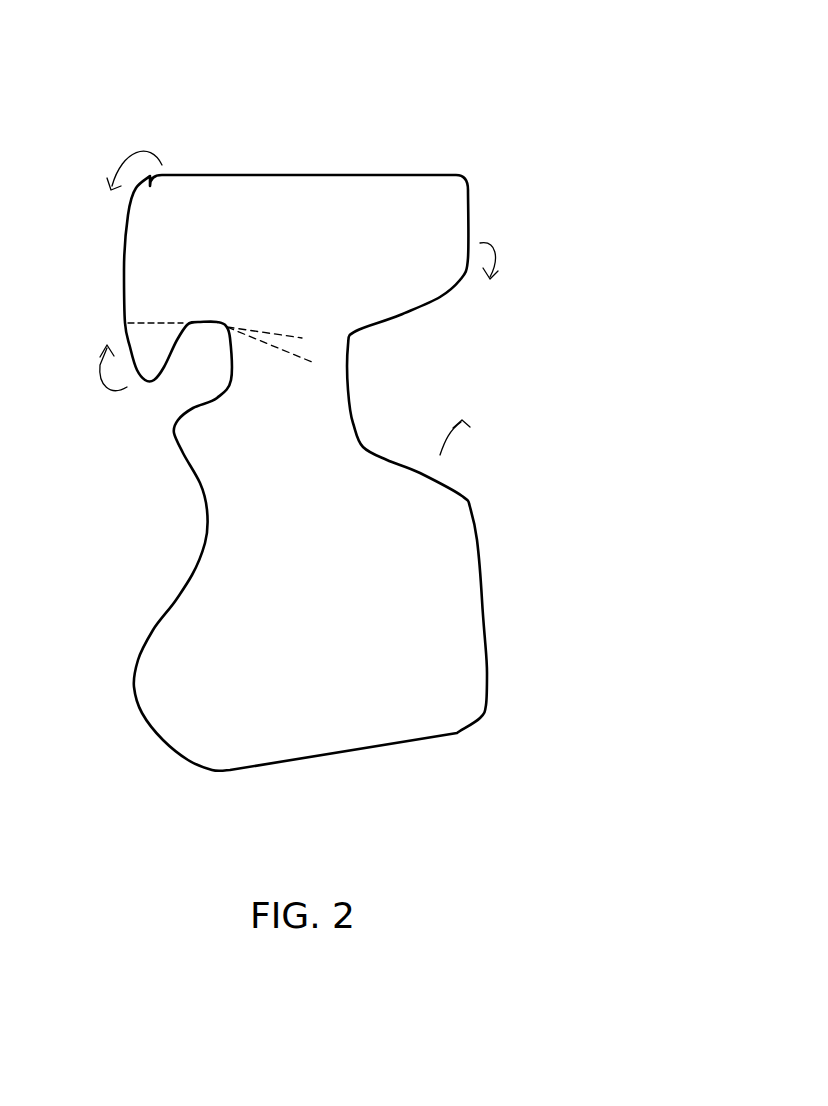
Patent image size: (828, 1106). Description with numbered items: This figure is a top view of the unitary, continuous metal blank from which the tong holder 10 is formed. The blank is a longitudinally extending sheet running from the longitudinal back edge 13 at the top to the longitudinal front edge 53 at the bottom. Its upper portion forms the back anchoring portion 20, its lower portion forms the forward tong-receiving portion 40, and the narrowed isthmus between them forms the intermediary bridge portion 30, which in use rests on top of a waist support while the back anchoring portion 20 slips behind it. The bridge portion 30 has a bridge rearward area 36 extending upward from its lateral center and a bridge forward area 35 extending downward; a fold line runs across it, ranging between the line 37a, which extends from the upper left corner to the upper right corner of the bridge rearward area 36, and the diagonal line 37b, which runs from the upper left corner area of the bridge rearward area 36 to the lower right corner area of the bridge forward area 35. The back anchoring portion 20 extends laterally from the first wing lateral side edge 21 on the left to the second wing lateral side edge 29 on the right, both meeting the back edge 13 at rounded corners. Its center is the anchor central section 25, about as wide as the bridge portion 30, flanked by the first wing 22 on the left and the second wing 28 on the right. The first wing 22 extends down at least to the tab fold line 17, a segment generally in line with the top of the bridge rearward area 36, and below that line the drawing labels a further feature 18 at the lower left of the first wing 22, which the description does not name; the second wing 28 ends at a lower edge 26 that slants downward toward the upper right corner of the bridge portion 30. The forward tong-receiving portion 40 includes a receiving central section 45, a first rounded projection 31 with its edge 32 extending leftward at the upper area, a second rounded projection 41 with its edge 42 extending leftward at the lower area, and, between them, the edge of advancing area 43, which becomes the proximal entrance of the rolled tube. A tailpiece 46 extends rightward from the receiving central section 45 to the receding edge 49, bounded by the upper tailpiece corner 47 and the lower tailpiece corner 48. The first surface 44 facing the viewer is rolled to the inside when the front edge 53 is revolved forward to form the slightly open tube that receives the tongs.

The tong holder 10 is at (193, 90).
The longitudinal back edge 13 is at (382, 172).
The tab fold line 17 is at (147, 323).
The front lip 18 is at (127, 343).
The back anchoring portion 20 is at (597, 236).
The first wing lateral side edge 21 is at (127, 228).
The first wing 22 is at (170, 257).
The anchor central section 25 is at (280, 230).
The lower edge 26 is at (440, 300).
The second wing 28 is at (407, 235).
The second wing lateral side edge 29 is at (468, 207).
The intermediary bridge portion 30 is at (148, 370).
The first rounded projection 31 is at (203, 453).
The first rounded projection edge 32 is at (173, 433).
The bridge forward area 35 is at (250, 403).
The bridge rearward area 36 is at (280, 325).
The fold line 37a is at (302, 338).
The fold line 37b is at (310, 362).
The forward tong-receiving portion 40 is at (542, 593).
The second rounded projection 41 is at (172, 687).
The second rounded projection edge 42 is at (162, 738).
The advancing area 43 is at (183, 582).
The first surface 44 is at (314, 649).
The receiving central section 45 is at (320, 563).
The tailpiece 46 is at (437, 640).
The upper tailpiece corner 47 is at (467, 493).
The lower tailpiece corner 48 is at (487, 713).
The receding edge 49 is at (483, 612).
The longitudinal front edge 53 is at (372, 748).